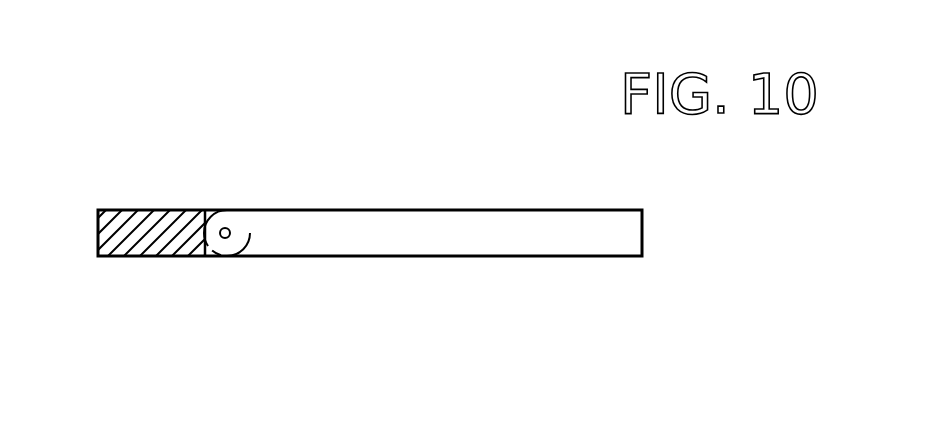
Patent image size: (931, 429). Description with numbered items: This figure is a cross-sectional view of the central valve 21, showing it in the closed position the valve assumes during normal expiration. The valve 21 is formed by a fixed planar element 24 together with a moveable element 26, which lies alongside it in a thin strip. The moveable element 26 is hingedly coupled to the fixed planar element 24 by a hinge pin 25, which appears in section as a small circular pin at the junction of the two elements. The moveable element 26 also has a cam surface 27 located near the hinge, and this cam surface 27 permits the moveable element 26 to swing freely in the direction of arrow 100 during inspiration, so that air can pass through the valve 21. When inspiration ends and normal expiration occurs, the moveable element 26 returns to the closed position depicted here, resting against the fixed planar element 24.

The central valve 21 is at (456, 185).
The planar element 24 is at (143, 218).
The hinge pin 25 is at (228, 230).
The movable element 26 is at (573, 227).
The cam surface 27 is at (215, 257).
The arrow 100 is at (465, 390).